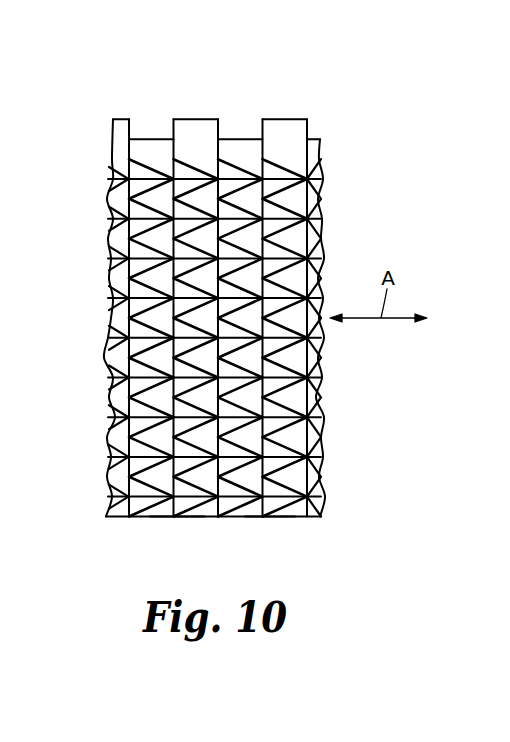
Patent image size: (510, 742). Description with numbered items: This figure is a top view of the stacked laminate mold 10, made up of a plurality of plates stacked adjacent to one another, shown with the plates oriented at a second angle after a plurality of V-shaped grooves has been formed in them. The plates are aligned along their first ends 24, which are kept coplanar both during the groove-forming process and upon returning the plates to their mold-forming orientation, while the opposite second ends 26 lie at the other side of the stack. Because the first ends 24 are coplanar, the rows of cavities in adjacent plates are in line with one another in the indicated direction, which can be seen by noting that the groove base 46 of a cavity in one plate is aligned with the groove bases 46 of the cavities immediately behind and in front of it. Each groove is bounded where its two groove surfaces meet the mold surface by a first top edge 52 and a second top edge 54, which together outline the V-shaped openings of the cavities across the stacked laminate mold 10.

The stacked laminate mold 10 is at (347, 83).
The first end 24 is at (287, 517).
The second end 26 is at (275, 118).
The groove base 46 is at (312, 400).
The first top edge 52 is at (140, 466).
The second top edge 54 is at (129, 465).